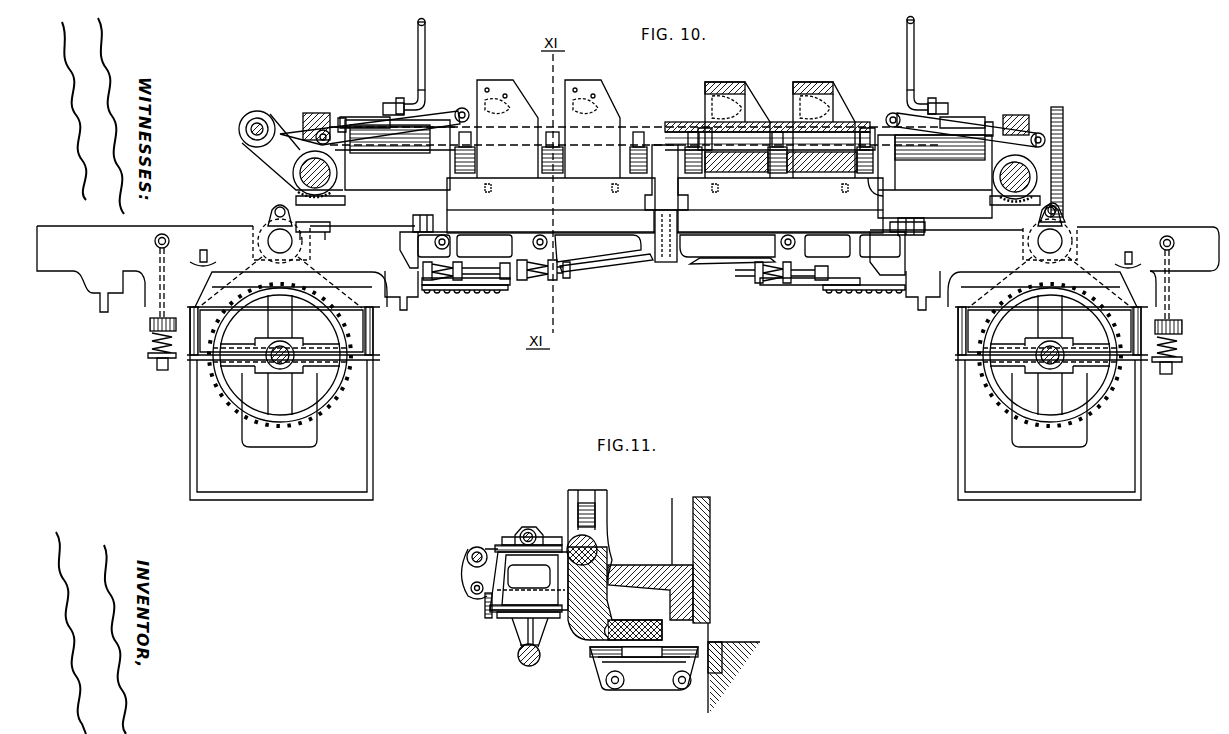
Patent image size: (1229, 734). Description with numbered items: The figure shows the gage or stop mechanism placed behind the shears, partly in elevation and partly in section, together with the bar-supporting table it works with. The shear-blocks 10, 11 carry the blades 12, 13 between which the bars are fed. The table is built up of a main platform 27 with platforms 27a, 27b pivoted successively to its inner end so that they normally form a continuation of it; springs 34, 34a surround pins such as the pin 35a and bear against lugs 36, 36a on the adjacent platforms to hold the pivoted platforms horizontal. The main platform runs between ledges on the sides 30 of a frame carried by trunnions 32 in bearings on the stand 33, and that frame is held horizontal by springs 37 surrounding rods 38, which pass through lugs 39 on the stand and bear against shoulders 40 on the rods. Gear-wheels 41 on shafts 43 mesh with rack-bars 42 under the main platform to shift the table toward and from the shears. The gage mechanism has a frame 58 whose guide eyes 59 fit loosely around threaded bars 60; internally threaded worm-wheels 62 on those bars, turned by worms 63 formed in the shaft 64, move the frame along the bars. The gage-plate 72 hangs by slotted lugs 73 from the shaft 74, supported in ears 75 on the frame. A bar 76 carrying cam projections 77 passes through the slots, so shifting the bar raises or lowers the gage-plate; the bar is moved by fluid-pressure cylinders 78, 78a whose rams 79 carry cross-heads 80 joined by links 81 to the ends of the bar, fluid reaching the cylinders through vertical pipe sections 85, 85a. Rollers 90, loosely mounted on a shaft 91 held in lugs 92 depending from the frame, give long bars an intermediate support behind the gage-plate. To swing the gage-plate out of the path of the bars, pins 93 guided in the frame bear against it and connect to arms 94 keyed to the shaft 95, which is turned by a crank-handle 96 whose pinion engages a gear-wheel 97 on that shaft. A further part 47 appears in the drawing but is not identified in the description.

In FIG. 11, the shear-block 10 is at (712, 558).
In FIG. 11, the shear-block 11 is at (730, 662).
In FIG. 11, the blade 12 is at (712, 595).
In FIG. 11, the blade 13 is at (715, 647).
In FIG. 10, the main platform 27 is at (428, 222).
In FIG. 10, the platform 27a is at (659, 244).
In FIG. 11, the platform 27a is at (653, 648).
In FIG. 10, the platform 27b is at (665, 248).
In FIG. 10, the frame sides 30 is at (628, 269).
In FIG. 10, the trunnion 32 is at (268, 241).
In FIG. 10, the stand 33 is at (374, 337).
In FIG. 10, the spring 34 is at (884, 288).
In FIG. 10, the spring 34a is at (530, 280).
In FIG. 10, the pin 35a is at (822, 281).
In FIG. 10, the lug 36 is at (462, 287).
In FIG. 10, the lug 36a is at (552, 283).
In FIG. 10, the spring 37 is at (150, 348).
In FIG. 10, the rod 38 is at (165, 287).
In FIG. 10, the lug 39 is at (150, 324).
In FIG. 10, the shoulder 40 is at (1173, 366).
In FIG. 10, the gear-wheel 41 is at (233, 414).
In FIG. 10, the rack-bar 42 is at (447, 292).
In FIG. 10, the shaft 43 is at (290, 349).
In FIG. 10, the bracket 47 is at (312, 232).
In FIG. 11, the frame 58 is at (486, 603).
In FIG. 10, the guide eye 59 is at (293, 175).
In FIG. 10, the threaded bar 60 is at (323, 197).
In FIG. 10, the worm-wheel 62 is at (300, 192).
In FIG. 10, the worm 63 is at (312, 115).
In FIG. 11, the shaft 64 is at (528, 530).
In FIG. 10, the gage-plate 72 is at (665, 221).
In FIG. 11, the gage-plate 72 is at (662, 632).
In FIG. 10, the lug 73 is at (570, 104).
In FIG. 11, the lug 73 is at (598, 513).
In FIG. 10, the shaft 74 is at (666, 146).
In FIG. 11, the shaft 74 is at (597, 543).
In FIG. 10, the ear 75 is at (455, 163).
In FIG. 11, the ear 75 is at (607, 555).
In FIG. 10, the bar 76 is at (704, 128).
In FIG. 11, the bar 76 is at (573, 535).
In FIG. 10, the cam projection 77 is at (755, 120).
In FIG. 10, the fluid-pressure cylinder 78 is at (957, 117).
In FIG. 10, the fluid-pressure cylinder 78a is at (366, 117).
In FIG. 10, the ram 79 is at (347, 120).
In FIG. 10, the cross-head 80 is at (324, 131).
In FIG. 10, the link 81 is at (441, 121).
In FIG. 10, the vertical pipe section 85 is at (915, 50).
In FIG. 10, the vertical pipe section 85a is at (427, 48).
In FIG. 10, the roller 90 is at (702, 262).
In FIG. 11, the roller 90 is at (520, 658).
In FIG. 10, the shaft 91 is at (614, 262).
In FIG. 11, the shaft 91 is at (540, 658).
In FIG. 10, the lug 92 is at (406, 236).
In FIG. 11, the lug 92 is at (517, 633).
In FIG. 11, the pin 93 is at (529, 581).
In FIG. 11, the arm 94 is at (465, 575).
In FIG. 11, the shaft 95 is at (477, 548).
In FIG. 10, the crank-handle 96 is at (1066, 214).
In FIG. 10, the gear-wheel 97 is at (1064, 120).